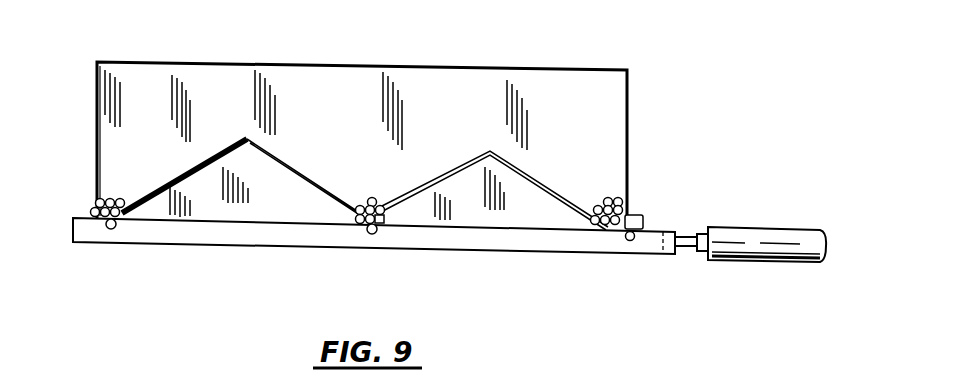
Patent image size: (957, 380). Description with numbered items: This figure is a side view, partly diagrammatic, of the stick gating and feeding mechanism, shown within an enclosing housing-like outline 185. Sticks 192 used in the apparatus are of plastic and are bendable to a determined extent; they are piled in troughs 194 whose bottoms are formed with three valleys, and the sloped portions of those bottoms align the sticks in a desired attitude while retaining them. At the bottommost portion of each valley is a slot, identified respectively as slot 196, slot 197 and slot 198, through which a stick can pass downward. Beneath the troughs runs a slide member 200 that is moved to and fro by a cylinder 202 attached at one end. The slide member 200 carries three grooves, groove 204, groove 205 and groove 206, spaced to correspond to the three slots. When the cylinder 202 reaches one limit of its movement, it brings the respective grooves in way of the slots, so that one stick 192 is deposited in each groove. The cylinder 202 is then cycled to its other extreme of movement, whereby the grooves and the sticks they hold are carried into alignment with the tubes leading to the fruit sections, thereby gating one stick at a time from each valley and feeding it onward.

The housing 185 is at (484, 70).
The stick 192 is at (369, 200).
The trough 194 is at (193, 172).
The slot 196 is at (600, 232).
The slot 197 is at (358, 220).
The slot 198 is at (100, 212).
The slide member 200 is at (523, 245).
The cylinder 202 is at (755, 230).
The groove 204 is at (634, 241).
The groove 205 is at (376, 235).
The groove 206 is at (116, 229).